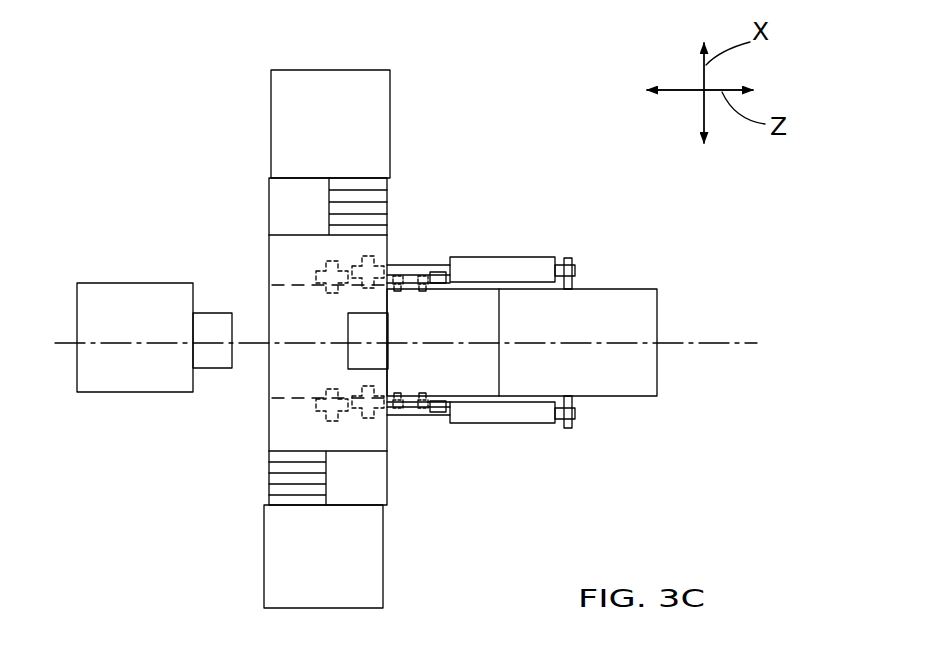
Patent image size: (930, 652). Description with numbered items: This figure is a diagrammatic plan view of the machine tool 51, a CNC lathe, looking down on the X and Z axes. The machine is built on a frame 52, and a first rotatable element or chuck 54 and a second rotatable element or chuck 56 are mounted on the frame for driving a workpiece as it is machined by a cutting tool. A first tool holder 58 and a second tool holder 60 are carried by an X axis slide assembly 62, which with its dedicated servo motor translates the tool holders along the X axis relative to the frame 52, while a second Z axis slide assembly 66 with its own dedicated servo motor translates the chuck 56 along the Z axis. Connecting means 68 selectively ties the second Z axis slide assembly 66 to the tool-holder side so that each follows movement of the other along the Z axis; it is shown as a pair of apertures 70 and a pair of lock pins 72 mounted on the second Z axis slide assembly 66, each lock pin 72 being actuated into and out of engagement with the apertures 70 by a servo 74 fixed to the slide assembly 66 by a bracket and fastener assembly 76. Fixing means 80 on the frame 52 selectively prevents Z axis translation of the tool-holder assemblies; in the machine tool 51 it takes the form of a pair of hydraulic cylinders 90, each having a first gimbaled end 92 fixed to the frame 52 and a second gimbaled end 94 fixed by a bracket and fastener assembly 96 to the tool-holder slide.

The machine tool 51 is at (473, 145).
The frame 52 is at (99, 283).
The first rotatable element or chuck 54 is at (200, 358).
The second rotatable element or chuck 56 is at (348, 330).
The first tool holder 58 is at (276, 498).
The second tool holder 60 is at (365, 178).
The X axis slide assembly 62 is at (268, 140).
The second Z axis slide assembly 66 is at (503, 366).
The connecting means 68 is at (360, 257).
The apertures 70 is at (405, 270).
The lock pins 72 is at (408, 408).
The servo 74 is at (372, 258).
The bracket and fastener assembly 76 is at (432, 280).
The fixing means 80 is at (534, 333).
The hydraulic cylinders 90 is at (548, 257).
The first gimbaled end 92 is at (578, 268).
The second gimbaled end 94 is at (330, 265).
The bracket and fastener assembly 96 is at (318, 277).